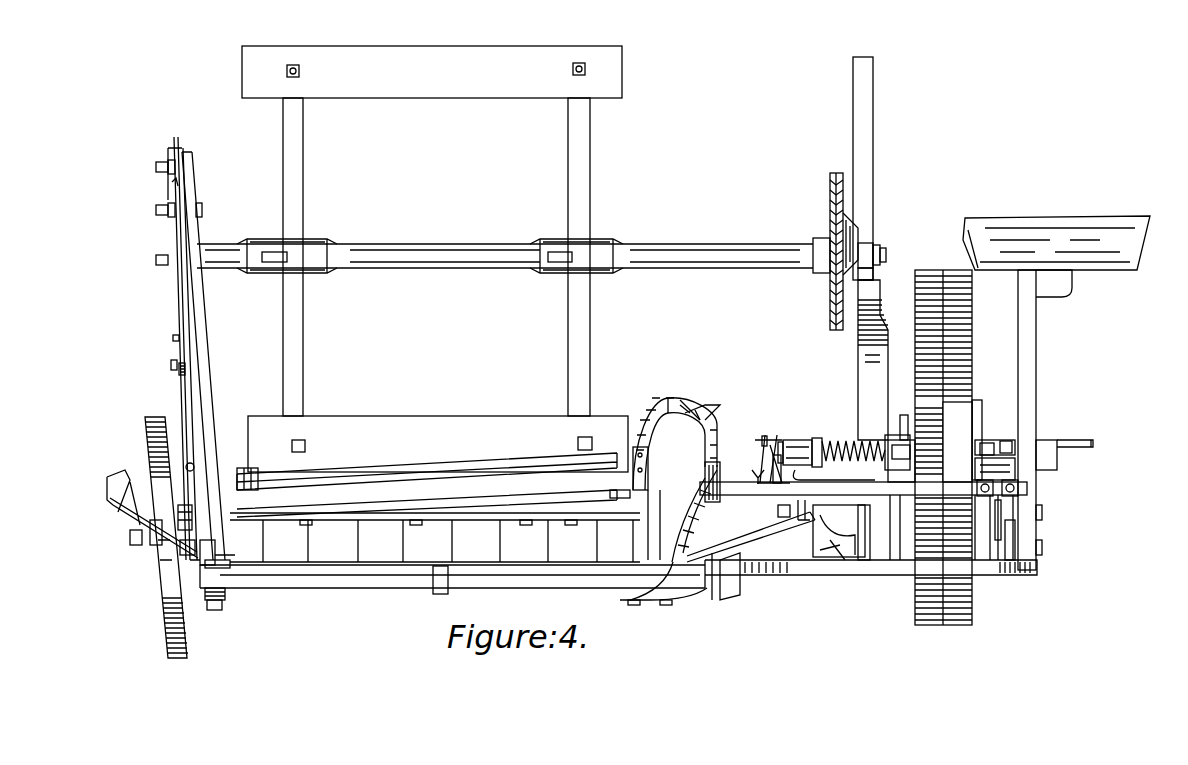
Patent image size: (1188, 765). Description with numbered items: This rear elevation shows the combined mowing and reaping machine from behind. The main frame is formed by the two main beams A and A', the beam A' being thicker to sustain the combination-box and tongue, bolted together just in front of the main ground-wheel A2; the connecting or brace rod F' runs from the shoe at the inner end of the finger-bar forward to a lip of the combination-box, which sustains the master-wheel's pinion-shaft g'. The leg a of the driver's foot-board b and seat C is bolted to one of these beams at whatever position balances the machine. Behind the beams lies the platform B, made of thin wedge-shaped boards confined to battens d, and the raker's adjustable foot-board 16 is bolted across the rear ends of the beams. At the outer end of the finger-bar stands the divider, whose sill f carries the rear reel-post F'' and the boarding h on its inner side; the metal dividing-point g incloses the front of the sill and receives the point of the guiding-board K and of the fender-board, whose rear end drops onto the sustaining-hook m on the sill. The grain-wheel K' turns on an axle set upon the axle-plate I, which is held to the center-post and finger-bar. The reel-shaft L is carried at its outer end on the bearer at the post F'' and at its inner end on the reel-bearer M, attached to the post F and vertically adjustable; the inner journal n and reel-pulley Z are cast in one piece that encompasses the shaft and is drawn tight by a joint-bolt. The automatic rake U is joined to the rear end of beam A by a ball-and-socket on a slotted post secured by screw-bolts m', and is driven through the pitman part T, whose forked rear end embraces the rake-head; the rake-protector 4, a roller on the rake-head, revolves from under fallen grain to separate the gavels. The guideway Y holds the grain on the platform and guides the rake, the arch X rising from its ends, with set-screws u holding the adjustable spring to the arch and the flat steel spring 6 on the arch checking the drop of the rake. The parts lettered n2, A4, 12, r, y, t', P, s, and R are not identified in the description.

The reel-shaft L is at (505, 251).
The reel-post F'' is at (190, 348).
The reel-pulley Z is at (835, 251).
The inner end journal n is at (926, 350).
The metal dividing-point g is at (879, 247).
The pinion-shaft g' is at (854, 357).
The reel-bearer M is at (865, 277).
The post F is at (863, 168).
The axle-plate I is at (873, 360).
The seat C is at (1056, 243).
The leg a is at (1045, 420).
The main ground-wheel A2 is at (943, 447).
The foot-board b is at (895, 440).
The sustaining-hook m is at (906, 420).
The bearing block n2 is at (995, 460).
The battens d is at (732, 517).
The bearing housing A4 is at (901, 461).
The automatic rake U is at (632, 498).
The platform B is at (618, 582).
The rake-protector 4 is at (432, 453).
The arch X is at (676, 438).
The set-screws u is at (662, 393).
The spring 6 is at (640, 468).
The post 12 is at (719, 475).
The slide r is at (620, 495).
The curved guide y is at (673, 535).
The brace rod F' is at (751, 556).
The rake-pitman part T is at (765, 459).
The guideway Y is at (758, 473).
The pin t' is at (768, 434).
The roller with spring P is at (844, 449).
The stop s is at (784, 511).
The main beam A' is at (905, 527).
The raker's foot-board 16 is at (849, 556).
The screw-bolts m' is at (993, 520).
The main beam A is at (1023, 532).
The grain-wheel K' is at (152, 537).
The boarding h is at (186, 530).
The guiding-board K is at (216, 549).
The sill f is at (217, 560).
The foot block R is at (218, 600).